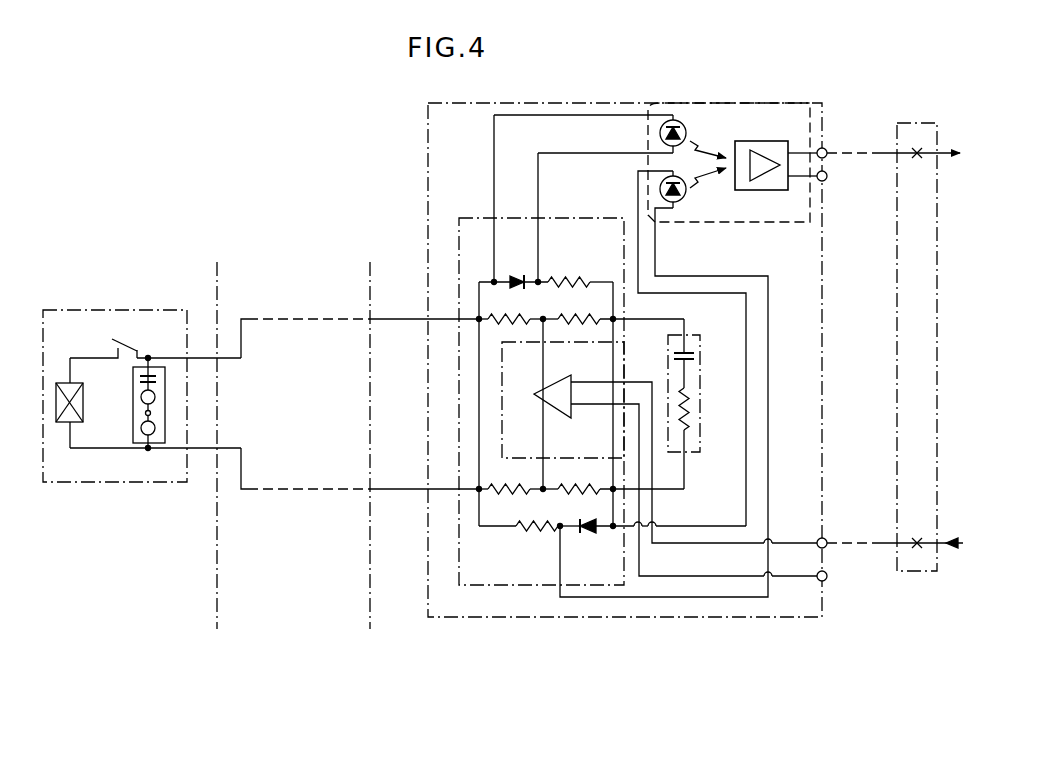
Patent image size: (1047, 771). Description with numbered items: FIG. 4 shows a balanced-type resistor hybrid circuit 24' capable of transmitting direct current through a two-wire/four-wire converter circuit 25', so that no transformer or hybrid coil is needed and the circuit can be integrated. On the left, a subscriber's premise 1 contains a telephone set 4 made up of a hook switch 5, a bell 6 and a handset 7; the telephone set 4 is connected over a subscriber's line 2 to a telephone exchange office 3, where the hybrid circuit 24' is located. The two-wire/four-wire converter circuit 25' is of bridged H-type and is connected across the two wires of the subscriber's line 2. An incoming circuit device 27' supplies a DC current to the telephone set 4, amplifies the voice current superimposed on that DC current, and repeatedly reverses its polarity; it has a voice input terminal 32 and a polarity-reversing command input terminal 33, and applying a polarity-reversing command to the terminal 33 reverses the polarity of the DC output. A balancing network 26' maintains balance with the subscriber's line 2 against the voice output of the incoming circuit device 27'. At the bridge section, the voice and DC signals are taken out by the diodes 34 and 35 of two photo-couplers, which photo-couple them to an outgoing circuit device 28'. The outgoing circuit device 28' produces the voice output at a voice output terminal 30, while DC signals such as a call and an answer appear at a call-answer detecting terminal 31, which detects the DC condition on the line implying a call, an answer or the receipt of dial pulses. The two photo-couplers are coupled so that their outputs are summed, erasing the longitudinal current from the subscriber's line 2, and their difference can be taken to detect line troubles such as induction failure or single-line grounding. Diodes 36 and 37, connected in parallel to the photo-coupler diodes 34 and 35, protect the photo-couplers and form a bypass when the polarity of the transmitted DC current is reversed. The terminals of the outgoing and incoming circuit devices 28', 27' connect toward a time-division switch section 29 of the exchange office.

The subscriber's premise 1 is at (169, 450).
The subscriber's line 2 is at (321, 450).
The telephone exchange office 3 is at (360, 498).
The telephone set 4 is at (131, 484).
The hook switch 5 is at (130, 340).
The bell 6 is at (136, 388).
The handset 7 is at (84, 400).
The hybrid circuit 24' is at (625, 380).
The two-wire/four-wire converter circuit 25' is at (613, 394).
The balancing network 26' is at (707, 404).
The incoming circuit device 27' is at (659, 459).
The outgoing circuit device 28' is at (732, 162).
The time-division switch section 29 is at (940, 462).
The voice output terminal 30 is at (825, 149).
The call-answer detecting terminal 31 is at (825, 180).
The voice input terminal 32 is at (825, 539).
The polarity-reversing command input terminal 33 is at (825, 581).
The photo-coupler diode 34 is at (660, 135).
The photo-coupler diode 35 is at (660, 191).
The diode 36 is at (518, 278).
The diode 37 is at (590, 532).